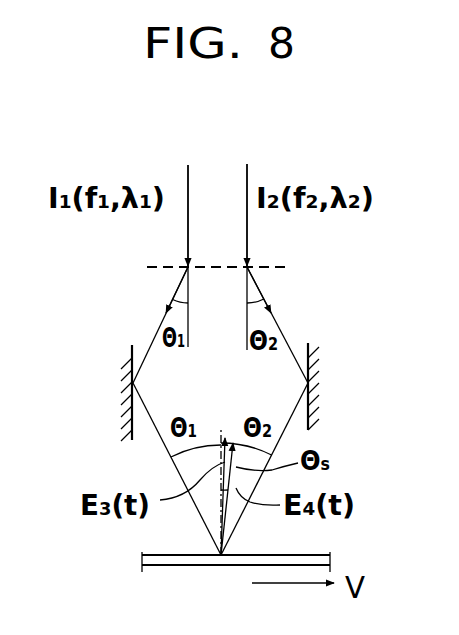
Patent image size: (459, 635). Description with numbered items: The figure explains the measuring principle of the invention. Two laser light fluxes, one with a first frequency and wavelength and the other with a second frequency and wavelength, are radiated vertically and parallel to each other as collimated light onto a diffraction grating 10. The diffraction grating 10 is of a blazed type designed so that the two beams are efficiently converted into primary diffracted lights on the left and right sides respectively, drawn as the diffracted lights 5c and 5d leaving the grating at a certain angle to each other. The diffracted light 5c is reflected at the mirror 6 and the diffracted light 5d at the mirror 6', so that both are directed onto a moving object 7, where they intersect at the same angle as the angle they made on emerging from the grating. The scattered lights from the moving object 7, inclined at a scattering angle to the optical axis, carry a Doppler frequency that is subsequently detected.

The diffraction grating 10 is at (285, 267).
The diffracted light 5c is at (163, 315).
The diffracted light 5d is at (274, 318).
The mirror 6 is at (100, 393).
The mirror 6' is at (338, 386).
The moving object 7 is at (186, 566).